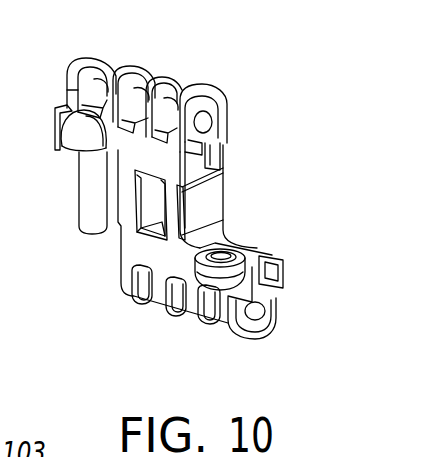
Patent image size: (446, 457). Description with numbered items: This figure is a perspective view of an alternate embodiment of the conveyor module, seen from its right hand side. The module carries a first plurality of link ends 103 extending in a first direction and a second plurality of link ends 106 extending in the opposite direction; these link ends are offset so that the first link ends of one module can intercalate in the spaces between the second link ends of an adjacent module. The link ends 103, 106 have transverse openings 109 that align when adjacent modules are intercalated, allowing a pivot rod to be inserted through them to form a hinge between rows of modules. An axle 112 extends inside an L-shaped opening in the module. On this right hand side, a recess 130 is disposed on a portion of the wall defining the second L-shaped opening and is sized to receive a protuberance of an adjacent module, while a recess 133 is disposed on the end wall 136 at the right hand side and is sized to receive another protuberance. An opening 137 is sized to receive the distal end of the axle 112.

The first plurality of link ends 103 is at (192, 88).
The second plurality of link ends 106 is at (229, 331).
The transverse openings 109 is at (208, 122).
The axle 112 is at (92, 202).
The recess 130 is at (203, 153).
The recess 133 is at (283, 279).
The end wall 136 is at (273, 297).
The opening 137 is at (188, 288).